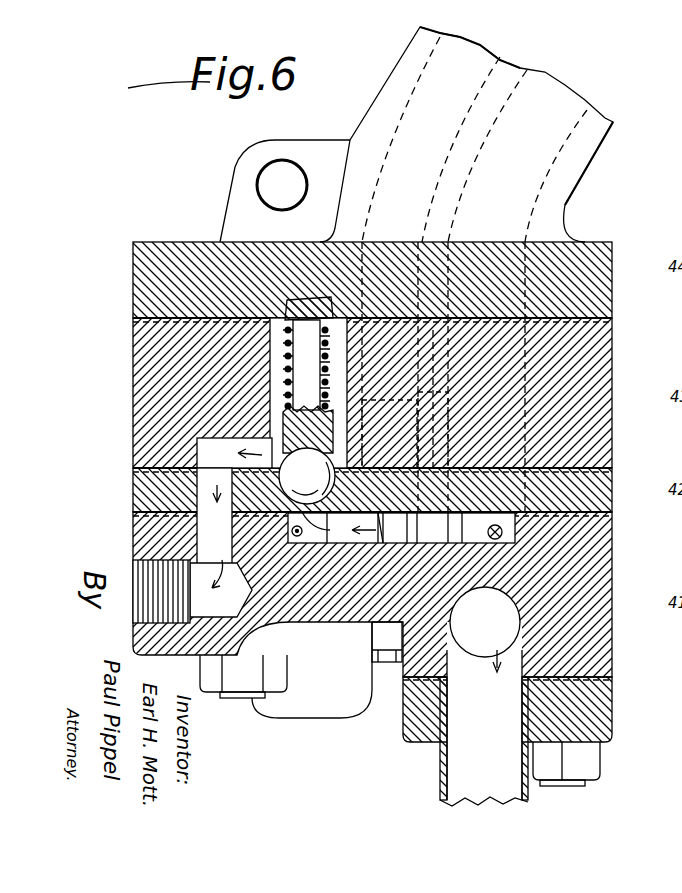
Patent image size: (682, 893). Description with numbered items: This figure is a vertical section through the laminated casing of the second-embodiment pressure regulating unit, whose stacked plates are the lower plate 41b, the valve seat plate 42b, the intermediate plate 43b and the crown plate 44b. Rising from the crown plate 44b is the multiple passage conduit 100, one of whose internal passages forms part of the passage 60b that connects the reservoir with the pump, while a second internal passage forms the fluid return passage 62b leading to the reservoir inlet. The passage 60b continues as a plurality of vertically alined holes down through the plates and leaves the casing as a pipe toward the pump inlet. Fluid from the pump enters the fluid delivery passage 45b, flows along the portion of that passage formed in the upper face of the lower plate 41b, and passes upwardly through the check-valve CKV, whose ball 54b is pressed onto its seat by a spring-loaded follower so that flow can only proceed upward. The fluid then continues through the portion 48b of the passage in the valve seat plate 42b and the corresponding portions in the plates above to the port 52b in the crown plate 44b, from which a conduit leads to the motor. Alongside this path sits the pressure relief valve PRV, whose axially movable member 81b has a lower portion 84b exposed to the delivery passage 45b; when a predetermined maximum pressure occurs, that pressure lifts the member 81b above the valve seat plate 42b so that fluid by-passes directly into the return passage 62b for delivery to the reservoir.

The fluid return passage 62b is at (508, 68).
The passage 60b is at (508, 68).
The multiple passage conduit 100 is at (600, 158).
The crown plate 44b is at (612, 292).
The intermediate plate 43b is at (612, 400).
The valve seat plate 42b is at (612, 497).
The lower plate 41b is at (612, 640).
The axially movable member 81b is at (443, 410).
The pressure relief valve PRV is at (448, 440).
The ball 54b is at (234, 453).
The fluid delivery passage portion 48b is at (302, 512).
The fluid delivery passage 45b is at (205, 528).
The port 52b is at (140, 575).
The check-valve CKV is at (310, 538).
The portion of axially movable member 84b is at (384, 545).